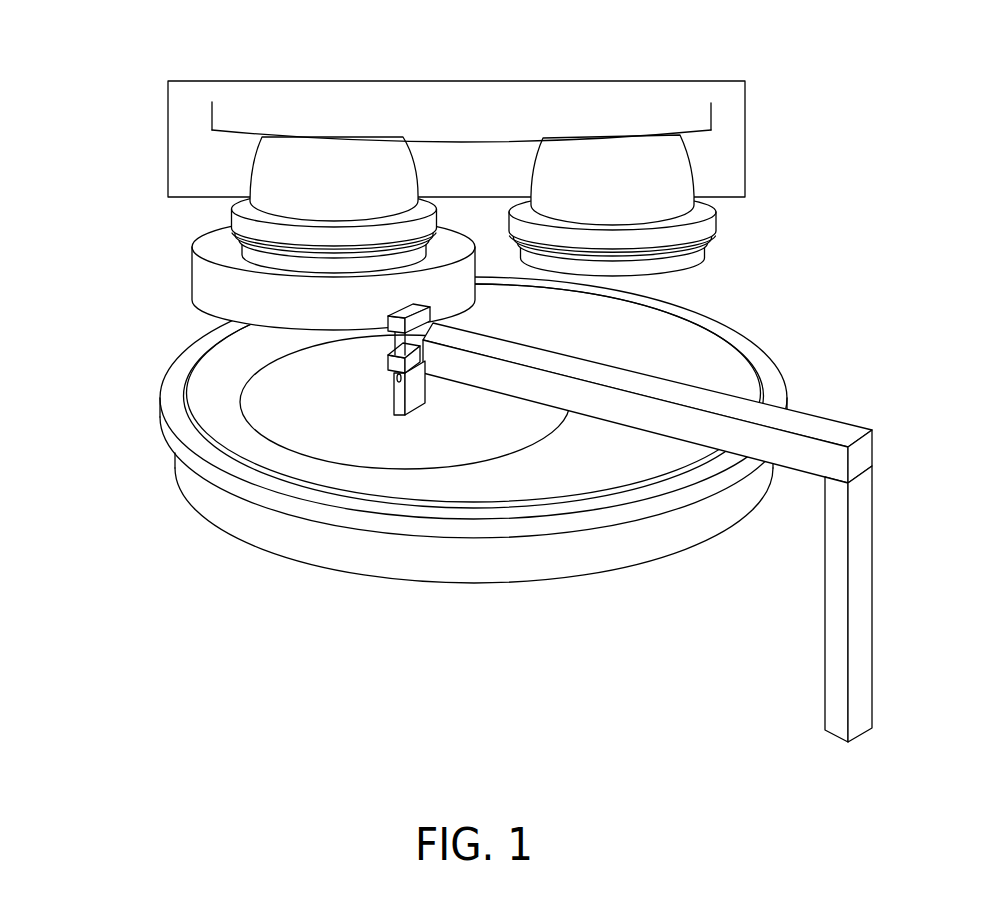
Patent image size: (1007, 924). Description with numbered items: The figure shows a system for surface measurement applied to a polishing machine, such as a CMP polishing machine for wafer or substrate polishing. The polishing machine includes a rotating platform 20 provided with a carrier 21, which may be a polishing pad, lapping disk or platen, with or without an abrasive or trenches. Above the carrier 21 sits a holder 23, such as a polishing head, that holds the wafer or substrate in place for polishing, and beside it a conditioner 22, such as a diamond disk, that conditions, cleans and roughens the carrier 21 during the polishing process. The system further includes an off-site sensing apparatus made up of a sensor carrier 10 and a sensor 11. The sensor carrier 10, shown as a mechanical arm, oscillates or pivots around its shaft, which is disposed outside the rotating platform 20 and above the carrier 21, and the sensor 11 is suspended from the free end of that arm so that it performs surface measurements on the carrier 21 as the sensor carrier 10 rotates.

The sensor carrier 10 is at (742, 412).
The sensor 11 is at (399, 397).
The rotating platform 20 is at (532, 517).
The carrier 21 is at (278, 420).
The conditioner 22 is at (652, 195).
The holder 23 is at (275, 232).